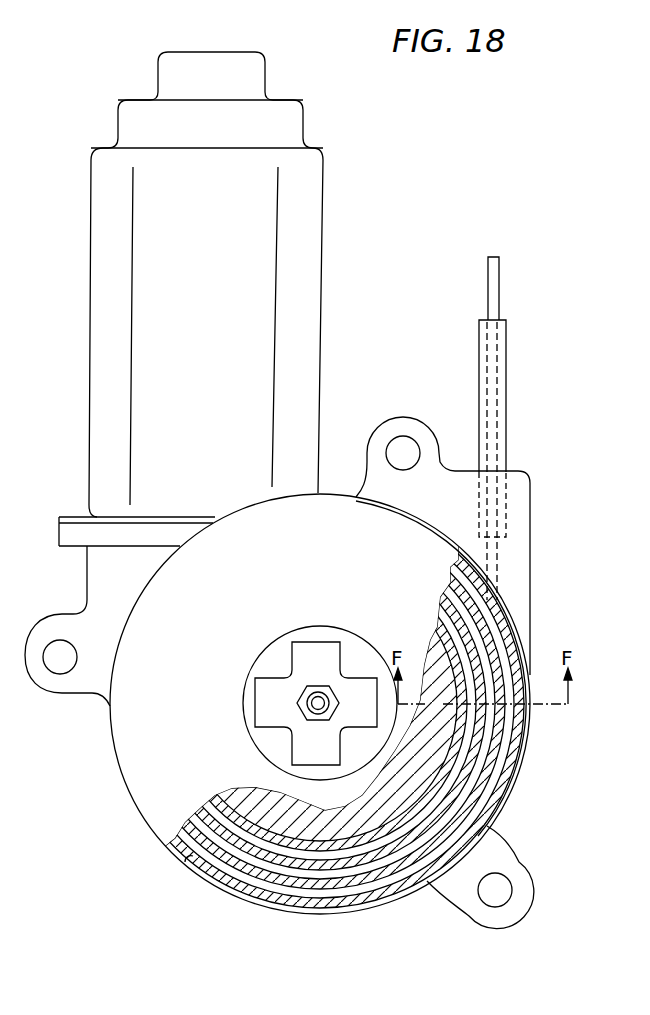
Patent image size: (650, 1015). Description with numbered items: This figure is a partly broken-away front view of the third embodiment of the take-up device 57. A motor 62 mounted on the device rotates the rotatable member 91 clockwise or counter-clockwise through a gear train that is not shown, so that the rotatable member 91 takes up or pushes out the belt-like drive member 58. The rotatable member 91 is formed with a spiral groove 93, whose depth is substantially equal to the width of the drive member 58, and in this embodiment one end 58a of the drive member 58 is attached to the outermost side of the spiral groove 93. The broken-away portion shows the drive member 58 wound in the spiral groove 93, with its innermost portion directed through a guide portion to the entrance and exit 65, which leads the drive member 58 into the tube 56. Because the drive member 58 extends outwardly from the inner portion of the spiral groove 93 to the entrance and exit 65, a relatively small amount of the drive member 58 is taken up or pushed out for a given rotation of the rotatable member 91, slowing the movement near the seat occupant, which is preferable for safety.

The tube 56 is at (510, 410).
The take-up device 57 is at (146, 827).
The drive member 58 is at (495, 288).
The one end of the drive member 58a is at (183, 865).
The motor 62 is at (140, 381).
The entrance and exit 65 is at (490, 566).
The rotatable member 91 is at (127, 753).
The spiral groove 93 is at (447, 648).